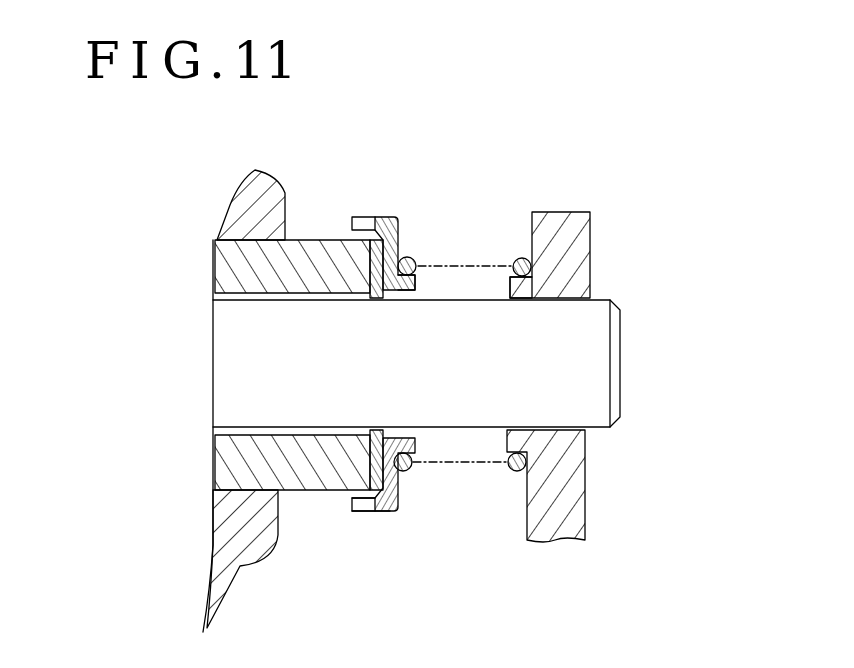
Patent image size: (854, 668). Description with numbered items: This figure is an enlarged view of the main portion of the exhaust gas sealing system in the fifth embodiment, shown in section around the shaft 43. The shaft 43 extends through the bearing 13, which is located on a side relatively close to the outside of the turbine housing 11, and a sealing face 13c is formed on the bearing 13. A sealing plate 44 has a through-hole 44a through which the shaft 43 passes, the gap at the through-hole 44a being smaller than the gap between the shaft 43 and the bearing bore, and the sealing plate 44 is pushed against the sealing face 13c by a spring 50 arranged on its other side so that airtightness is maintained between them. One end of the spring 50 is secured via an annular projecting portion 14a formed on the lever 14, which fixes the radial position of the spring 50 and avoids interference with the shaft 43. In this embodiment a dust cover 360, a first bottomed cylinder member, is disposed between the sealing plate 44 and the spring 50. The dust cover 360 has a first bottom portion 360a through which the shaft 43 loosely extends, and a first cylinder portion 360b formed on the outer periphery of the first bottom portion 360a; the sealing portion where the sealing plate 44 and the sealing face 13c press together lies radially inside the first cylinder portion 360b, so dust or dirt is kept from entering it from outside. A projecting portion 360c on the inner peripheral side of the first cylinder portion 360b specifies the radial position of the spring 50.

The turbine housing 11 is at (222, 545).
The bearing 13 is at (223, 268).
The sealing face 13c is at (376, 512).
The lever 14 is at (568, 490).
The annular projecting portion 14a is at (527, 288).
The shaft 43 is at (217, 370).
The sealing plate 44 is at (370, 262).
The through-hole 44a is at (372, 430).
The spring 50 is at (520, 258).
The dust cover 360 is at (390, 217).
The first bottom portion 360a is at (409, 257).
The first cylinder portion 360b is at (359, 222).
The projecting portion 360c is at (415, 288).